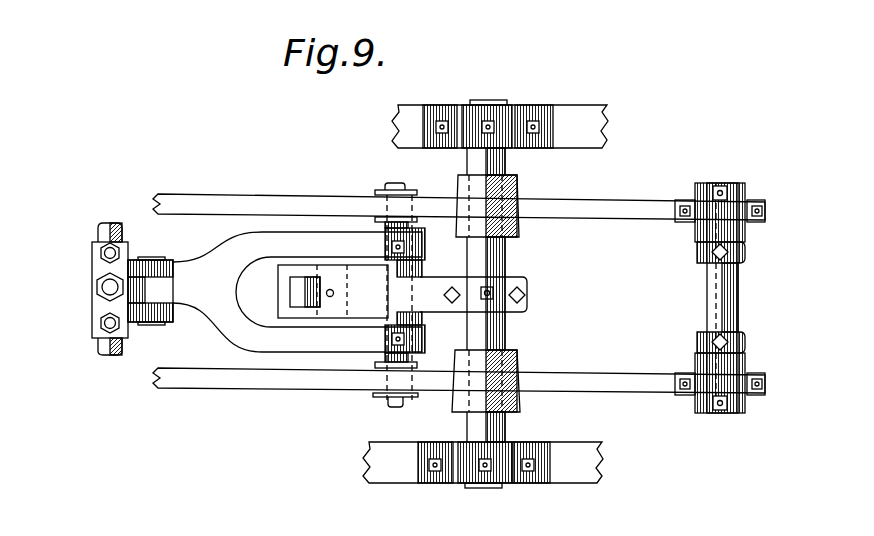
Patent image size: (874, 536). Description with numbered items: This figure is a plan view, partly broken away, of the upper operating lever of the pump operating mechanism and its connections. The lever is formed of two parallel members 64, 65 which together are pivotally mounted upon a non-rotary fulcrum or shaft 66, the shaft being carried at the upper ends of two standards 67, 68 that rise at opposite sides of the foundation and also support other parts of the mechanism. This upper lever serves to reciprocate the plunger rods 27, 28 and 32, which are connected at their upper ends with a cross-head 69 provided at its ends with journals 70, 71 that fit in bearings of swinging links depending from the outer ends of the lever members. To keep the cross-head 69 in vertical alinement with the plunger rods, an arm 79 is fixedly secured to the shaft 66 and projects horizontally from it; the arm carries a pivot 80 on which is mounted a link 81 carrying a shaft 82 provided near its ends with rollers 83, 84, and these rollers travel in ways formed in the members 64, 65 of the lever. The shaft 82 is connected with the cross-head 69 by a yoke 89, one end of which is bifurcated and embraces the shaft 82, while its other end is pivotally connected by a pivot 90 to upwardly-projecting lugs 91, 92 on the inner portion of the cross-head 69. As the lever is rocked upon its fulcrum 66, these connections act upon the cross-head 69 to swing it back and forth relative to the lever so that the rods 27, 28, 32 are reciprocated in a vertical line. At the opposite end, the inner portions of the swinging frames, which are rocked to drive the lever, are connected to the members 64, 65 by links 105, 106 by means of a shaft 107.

The plunger rod 27 is at (101, 252).
The plunger rod 28 is at (101, 327).
The plunger rod 32 is at (110, 287).
The member of upper operating lever 64 is at (260, 389).
The member of upper operating lever 65 is at (332, 204).
The non-rotary fulcrum shaft 66 is at (506, 337).
The standard 67 is at (582, 456).
The standard 68 is at (580, 118).
The cross-head 69 is at (100, 317).
The journal 70 is at (106, 350).
The journal 71 is at (108, 226).
The arm 79 is at (433, 290).
The pivot 80 is at (348, 273).
The link 81 is at (296, 310).
The shaft 82 is at (372, 365).
The roller 83 is at (372, 398).
The roller 84 is at (386, 190).
The yoke 89 is at (259, 236).
The pivot 90 is at (170, 262).
The lug 91 is at (172, 318).
The lug 92 is at (143, 264).
The link 105 is at (700, 342).
The link 106 is at (700, 251).
The shaft 107 is at (720, 291).